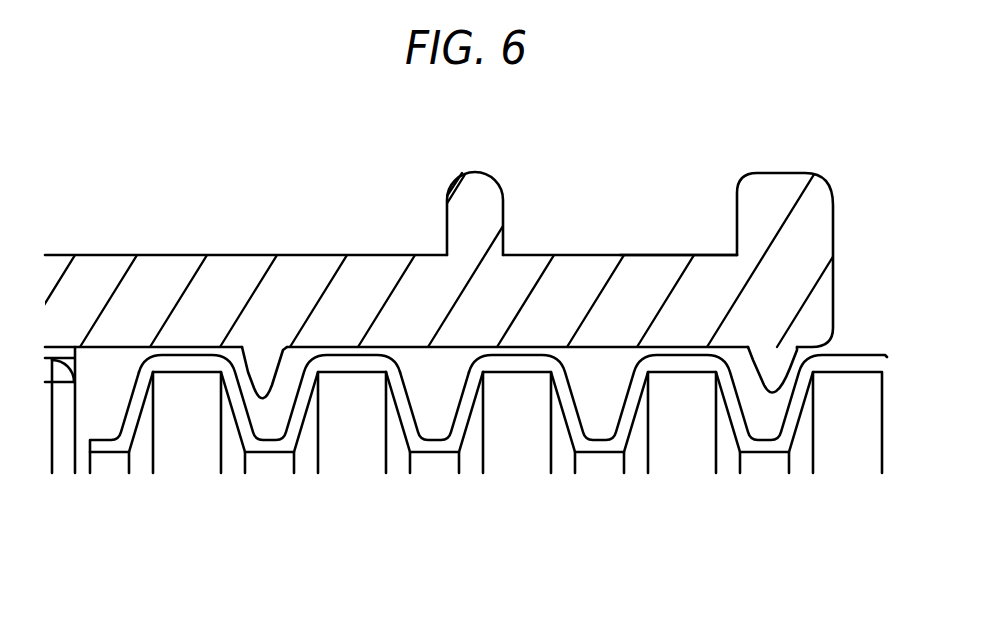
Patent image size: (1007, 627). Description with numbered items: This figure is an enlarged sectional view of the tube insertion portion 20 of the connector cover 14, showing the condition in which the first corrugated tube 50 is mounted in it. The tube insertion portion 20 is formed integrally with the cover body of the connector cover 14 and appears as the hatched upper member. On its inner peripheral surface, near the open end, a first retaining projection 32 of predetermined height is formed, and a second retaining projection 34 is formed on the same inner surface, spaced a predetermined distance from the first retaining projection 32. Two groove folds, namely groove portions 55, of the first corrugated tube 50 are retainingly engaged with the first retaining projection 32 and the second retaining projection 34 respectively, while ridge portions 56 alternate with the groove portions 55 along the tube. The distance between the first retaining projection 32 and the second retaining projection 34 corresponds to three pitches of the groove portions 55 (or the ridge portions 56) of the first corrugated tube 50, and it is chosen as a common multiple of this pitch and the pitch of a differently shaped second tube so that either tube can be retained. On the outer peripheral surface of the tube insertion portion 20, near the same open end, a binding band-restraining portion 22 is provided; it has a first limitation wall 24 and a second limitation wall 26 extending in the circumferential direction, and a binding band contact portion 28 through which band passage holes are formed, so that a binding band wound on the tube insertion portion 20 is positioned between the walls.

The connector cover 14 is at (102, 255).
The tube insertion portion 20 is at (287, 273).
The binding band-restraining portion 22 is at (654, 241).
The first limitation wall 24 is at (820, 203).
The second limitation wall 26 is at (457, 218).
The binding band contact portion 28 is at (541, 255).
The first retaining projection 32 is at (772, 378).
The second retaining projection 34 is at (263, 377).
The first corrugated tube 50 is at (107, 448).
The groove portions 55 is at (420, 444).
The ridge portions 56 is at (358, 354).